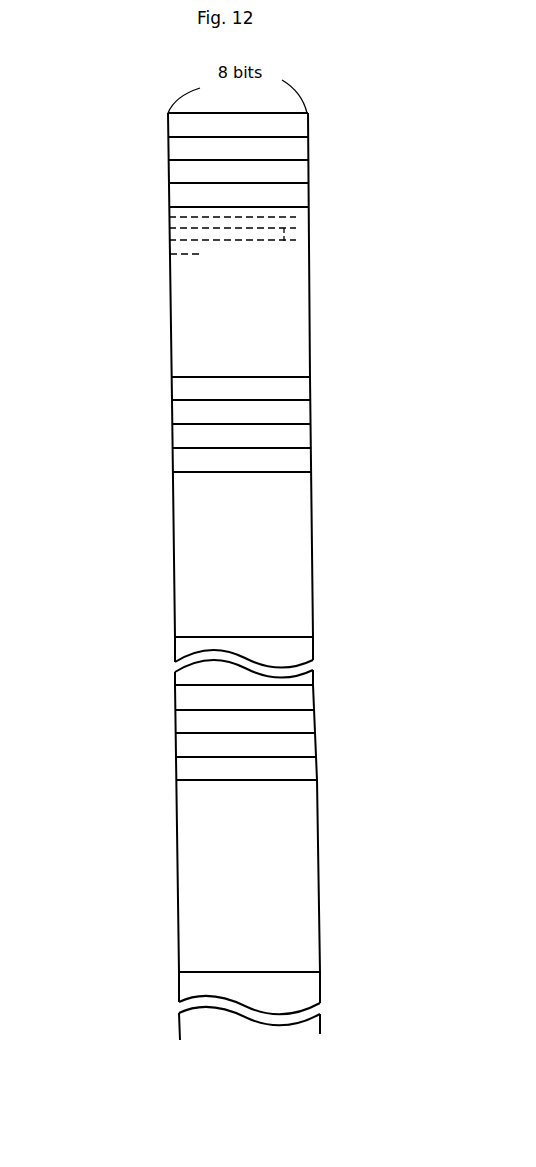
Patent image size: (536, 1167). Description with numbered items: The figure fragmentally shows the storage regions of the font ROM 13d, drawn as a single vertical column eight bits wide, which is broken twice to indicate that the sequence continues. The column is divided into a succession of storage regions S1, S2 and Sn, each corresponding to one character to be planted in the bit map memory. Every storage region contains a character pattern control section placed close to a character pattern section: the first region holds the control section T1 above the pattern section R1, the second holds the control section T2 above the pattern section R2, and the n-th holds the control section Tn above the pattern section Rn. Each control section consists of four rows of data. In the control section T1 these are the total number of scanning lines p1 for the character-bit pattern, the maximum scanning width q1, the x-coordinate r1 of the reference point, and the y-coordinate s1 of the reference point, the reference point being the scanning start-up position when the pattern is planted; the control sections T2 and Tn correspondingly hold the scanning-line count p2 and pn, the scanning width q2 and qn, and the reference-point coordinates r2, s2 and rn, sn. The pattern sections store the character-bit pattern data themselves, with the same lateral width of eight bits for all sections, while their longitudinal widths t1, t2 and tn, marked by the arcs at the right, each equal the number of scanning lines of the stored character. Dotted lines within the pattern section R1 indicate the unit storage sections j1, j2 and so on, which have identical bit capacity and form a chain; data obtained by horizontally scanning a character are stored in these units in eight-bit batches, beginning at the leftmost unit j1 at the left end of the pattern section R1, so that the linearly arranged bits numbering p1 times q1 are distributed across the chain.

The font ROM 13d is at (340, 152).
The unit storage section j1 is at (283, 215).
The unit storage section j2 is at (284, 229).
The longitudinal width t1 is at (310, 377).
The longitudinal width t2 is at (313, 637).
The longitudinal width tn is at (320, 972).
The storage region S1 is at (105, 312).
The storage region S2 is at (108, 565).
The storage region Sn is at (110, 728).
The character pattern control section T1 is at (164, 113).
The character pattern control section T2 is at (165, 377).
The character pattern control section Tn is at (169, 685).
The character pattern section R1 is at (164, 207).
The character pattern section R2 is at (166, 637).
The character pattern section Rn is at (169, 972).
The total number of scanning lines data p1 is at (232, 122).
The maximum scanning width data q1 is at (232, 145).
The reference point x-coordinate data r1 is at (232, 170).
The reference point y-coordinate data s1 is at (231, 194).
The total number of scanning lines data p2 is at (234, 386).
The maximum scanning width data q2 is at (234, 410).
The reference point x-coordinate data r2 is at (234, 435).
The reference point y-coordinate data s2 is at (233, 459).
The total number of scanning lines data pn is at (237, 694).
The maximum scanning width data qn is at (237, 718).
The reference point x-coordinate data rn is at (237, 743).
The reference point y-coordinate data sn is at (236, 767).